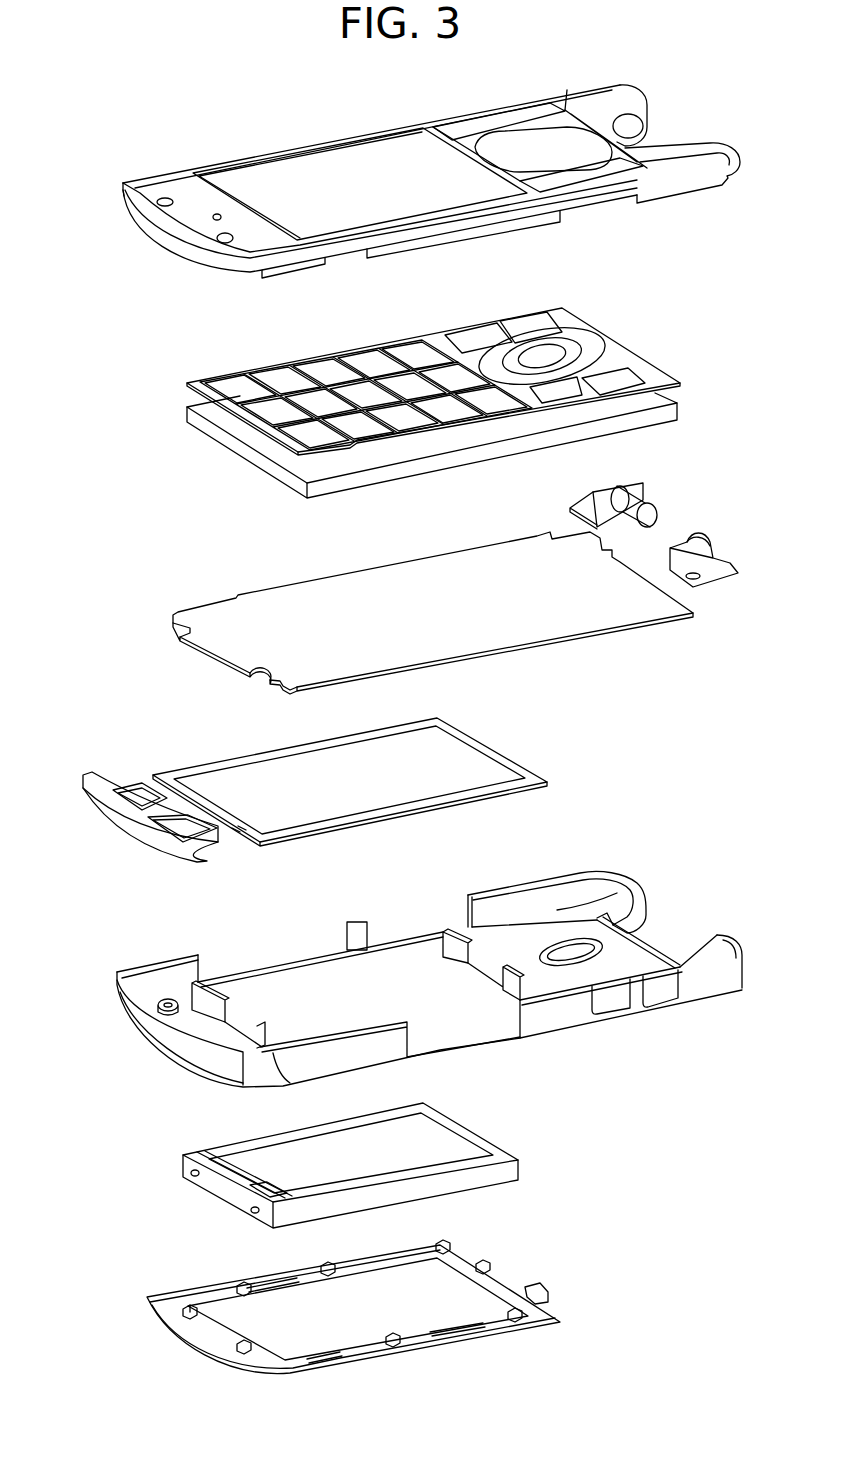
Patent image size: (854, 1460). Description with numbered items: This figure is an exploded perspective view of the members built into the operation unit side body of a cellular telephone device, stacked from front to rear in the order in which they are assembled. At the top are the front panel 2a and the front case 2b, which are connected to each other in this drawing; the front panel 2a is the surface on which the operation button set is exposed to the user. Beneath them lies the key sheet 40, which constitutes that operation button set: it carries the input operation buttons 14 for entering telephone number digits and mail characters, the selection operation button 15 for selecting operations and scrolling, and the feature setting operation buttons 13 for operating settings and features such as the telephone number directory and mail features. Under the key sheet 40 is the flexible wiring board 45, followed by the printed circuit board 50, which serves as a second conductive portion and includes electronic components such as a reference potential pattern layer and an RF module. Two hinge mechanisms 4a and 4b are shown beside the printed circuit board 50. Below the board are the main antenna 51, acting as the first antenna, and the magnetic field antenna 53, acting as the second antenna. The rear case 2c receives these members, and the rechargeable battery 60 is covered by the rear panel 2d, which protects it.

The front panel 2a is at (542, 100).
The front case 2b is at (128, 185).
The input operation buttons 14 is at (233, 386).
The selection operation button 15 is at (543, 355).
The key sheet 40 is at (433, 362).
The feature setting operation buttons 13 is at (610, 378).
The flexible wiring board 45 is at (260, 456).
The hinge mechanism 4a is at (650, 500).
The hinge mechanism 4b is at (705, 533).
The printed circuit board 50 is at (247, 661).
The magnetic field antenna 53 is at (525, 768).
The main antenna 51 is at (105, 834).
The rear case 2c is at (625, 878).
The rechargeable battery 60 is at (482, 1128).
The rear panel 2d is at (490, 1283).